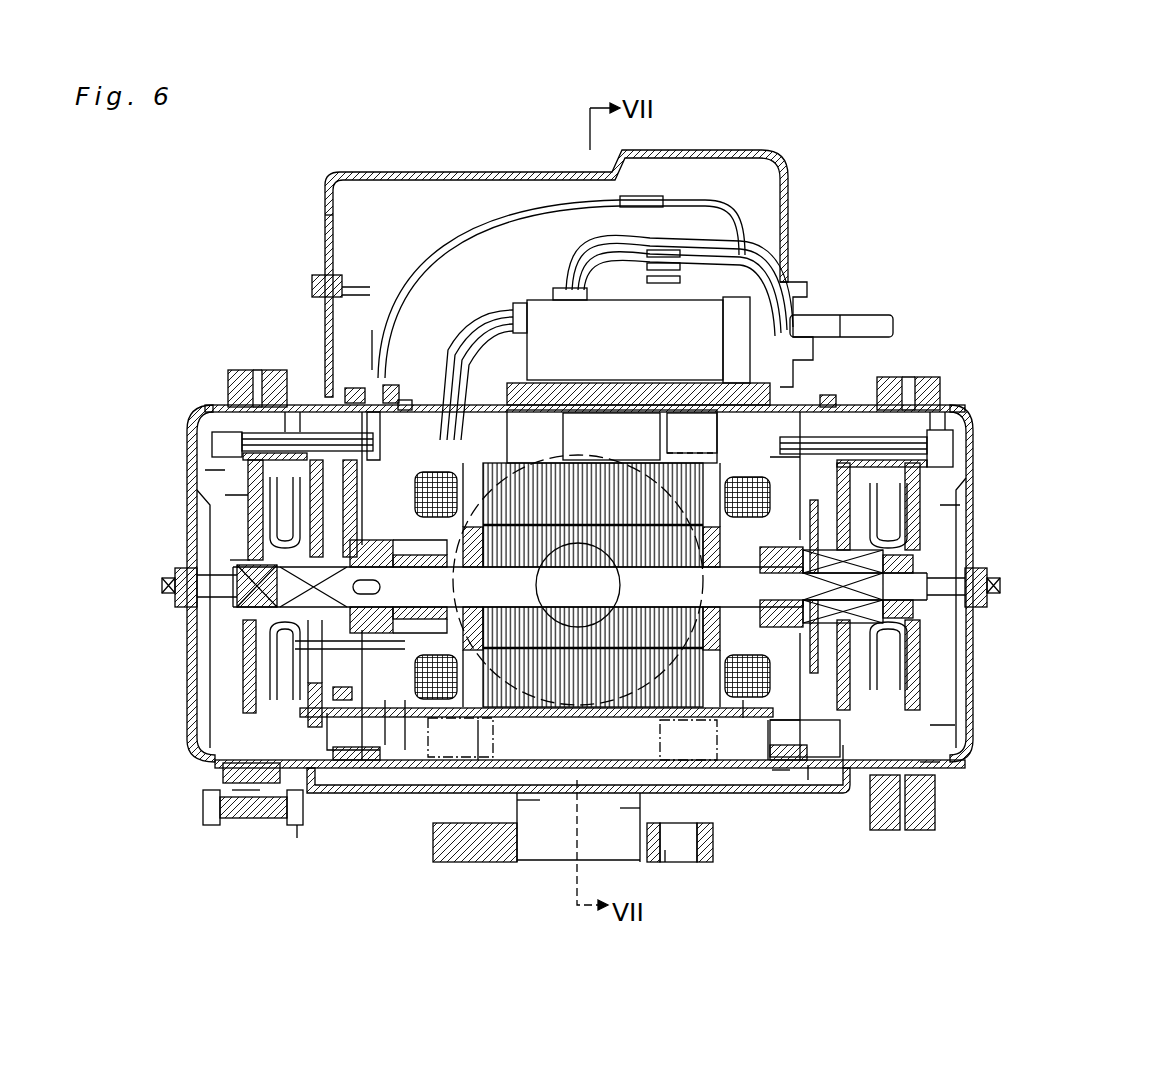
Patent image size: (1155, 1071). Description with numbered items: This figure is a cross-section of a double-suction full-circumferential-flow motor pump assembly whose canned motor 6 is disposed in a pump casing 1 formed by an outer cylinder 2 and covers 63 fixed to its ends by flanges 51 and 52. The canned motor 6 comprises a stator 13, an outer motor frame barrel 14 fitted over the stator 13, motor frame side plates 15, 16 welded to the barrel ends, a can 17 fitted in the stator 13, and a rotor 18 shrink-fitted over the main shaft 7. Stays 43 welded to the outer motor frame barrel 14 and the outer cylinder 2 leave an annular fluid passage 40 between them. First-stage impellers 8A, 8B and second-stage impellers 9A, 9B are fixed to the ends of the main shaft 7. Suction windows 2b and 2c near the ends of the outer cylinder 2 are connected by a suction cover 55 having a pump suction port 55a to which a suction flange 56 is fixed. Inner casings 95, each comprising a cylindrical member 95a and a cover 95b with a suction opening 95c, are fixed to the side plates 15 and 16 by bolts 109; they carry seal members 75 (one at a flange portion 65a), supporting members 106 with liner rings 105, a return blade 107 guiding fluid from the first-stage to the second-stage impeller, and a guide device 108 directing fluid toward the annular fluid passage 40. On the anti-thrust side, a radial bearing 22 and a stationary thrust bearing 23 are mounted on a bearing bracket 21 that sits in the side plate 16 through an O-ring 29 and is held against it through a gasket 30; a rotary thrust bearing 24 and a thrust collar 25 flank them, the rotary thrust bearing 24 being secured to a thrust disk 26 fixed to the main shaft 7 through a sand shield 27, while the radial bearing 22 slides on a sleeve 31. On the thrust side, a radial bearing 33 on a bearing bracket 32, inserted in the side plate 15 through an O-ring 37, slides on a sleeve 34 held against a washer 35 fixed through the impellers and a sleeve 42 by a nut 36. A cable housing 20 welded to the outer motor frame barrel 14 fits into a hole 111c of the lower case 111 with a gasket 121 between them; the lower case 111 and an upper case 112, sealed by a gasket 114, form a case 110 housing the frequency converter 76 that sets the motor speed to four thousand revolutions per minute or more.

The pump casing 1 is at (320, 433).
The outer cylinder 2 is at (855, 440).
The suction window 2b is at (855, 790).
The suction window 2c is at (342, 795).
The canned motor 6 is at (718, 445).
The main shaft 7 is at (708, 440).
The impeller 8A is at (930, 435).
The impeller 8B is at (292, 405).
The impeller 9A is at (868, 420).
The impeller 9B is at (300, 420).
The stator 13 is at (515, 825).
The outer motor frame barrel 14 is at (582, 400).
The motor frame side plate 15 is at (772, 770).
The motor frame side plate 16 is at (320, 793).
The can 17 is at (750, 330).
The rotor 18 is at (478, 760).
The cable housing 20 is at (475, 360).
The bearing bracket 21 is at (232, 790).
The radial bearing 22 is at (405, 750).
The stationary thrust bearing 23 is at (162, 585).
The rotary thrust bearing 24 is at (265, 530).
The thrust collar 25 is at (417, 722).
The thrust disk 26 is at (230, 560).
The sand shield 27 is at (445, 745).
The O-ring 29 is at (358, 760).
The gasket 30 is at (468, 392).
The sleeve 31 is at (385, 760).
The bearing bracket 32 is at (843, 768).
The radial bearing 33 is at (768, 760).
The sleeve 34 is at (743, 718).
The washer 35 is at (930, 620).
The nut 36 is at (920, 605).
The O-ring 37 is at (745, 400).
The annular fluid passage 40 is at (640, 435).
The sleeve 42 is at (1000, 595).
The stays 43 is at (765, 240).
The flange 51 is at (270, 830).
The flange 52 is at (232, 830).
The suction cover 55 is at (735, 795).
The pump suction port 55a is at (540, 800).
The suction flange 56 is at (665, 862).
The cover 63 is at (205, 470).
The flange portion 65a is at (225, 822).
The seal member 75 is at (375, 392).
The frequency converter 76 is at (755, 205).
The inner casing 95 is at (235, 762).
The cylindrical member 95a is at (940, 762).
The cover 95b is at (240, 690).
The suction opening 95c is at (245, 545).
The liner ring 105 is at (230, 612).
The supporting member 106 is at (240, 672).
The return blade 107 is at (225, 495).
The guide device 108 is at (297, 838).
The bolt 109 is at (235, 405).
The case 110 is at (496, 273).
The lower case 111 is at (325, 290).
The hole 111c is at (372, 330).
The upper case 112 is at (332, 220).
The gasket 114 is at (357, 170).
The gasket 121 is at (527, 365).